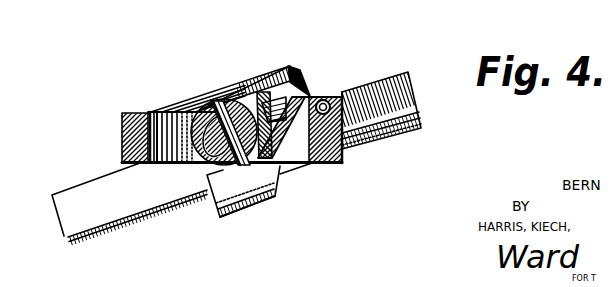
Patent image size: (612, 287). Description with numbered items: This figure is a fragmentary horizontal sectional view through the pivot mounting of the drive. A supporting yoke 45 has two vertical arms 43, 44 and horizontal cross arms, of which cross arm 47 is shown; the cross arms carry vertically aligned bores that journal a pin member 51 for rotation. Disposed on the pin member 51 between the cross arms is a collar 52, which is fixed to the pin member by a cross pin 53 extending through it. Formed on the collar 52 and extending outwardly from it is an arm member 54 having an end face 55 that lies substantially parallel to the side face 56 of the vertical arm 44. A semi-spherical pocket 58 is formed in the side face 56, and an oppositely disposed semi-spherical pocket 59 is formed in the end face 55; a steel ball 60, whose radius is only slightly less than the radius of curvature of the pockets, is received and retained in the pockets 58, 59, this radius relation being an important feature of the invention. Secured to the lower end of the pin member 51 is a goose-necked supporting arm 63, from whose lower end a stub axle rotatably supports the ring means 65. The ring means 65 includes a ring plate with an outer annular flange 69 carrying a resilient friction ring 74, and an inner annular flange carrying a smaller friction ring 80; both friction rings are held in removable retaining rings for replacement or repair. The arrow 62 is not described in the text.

The vertical arm 43 is at (122, 116).
The vertical arm 44 is at (360, 140).
The supporting yoke 45 is at (116, 143).
The cross arm 47 is at (173, 163).
The pin member 51 is at (198, 100).
The collar 52 is at (235, 101).
The cross pin 53 is at (236, 217).
The arm member 54 is at (276, 117).
The end face 55 is at (305, 126).
The side face 56 is at (341, 92).
The semi-spherical pocket 58 is at (323, 155).
The semi-spherical pocket 59 is at (322, 100).
The ball 60 is at (329, 101).
The direction arrow 62 is at (358, 108).
The supporting arm 63 is at (268, 204).
The ring means 65 is at (114, 234).
The outer annular flange 69 is at (68, 214).
The friction ring 74 is at (163, 215).
The friction ring 80 is at (168, 108).